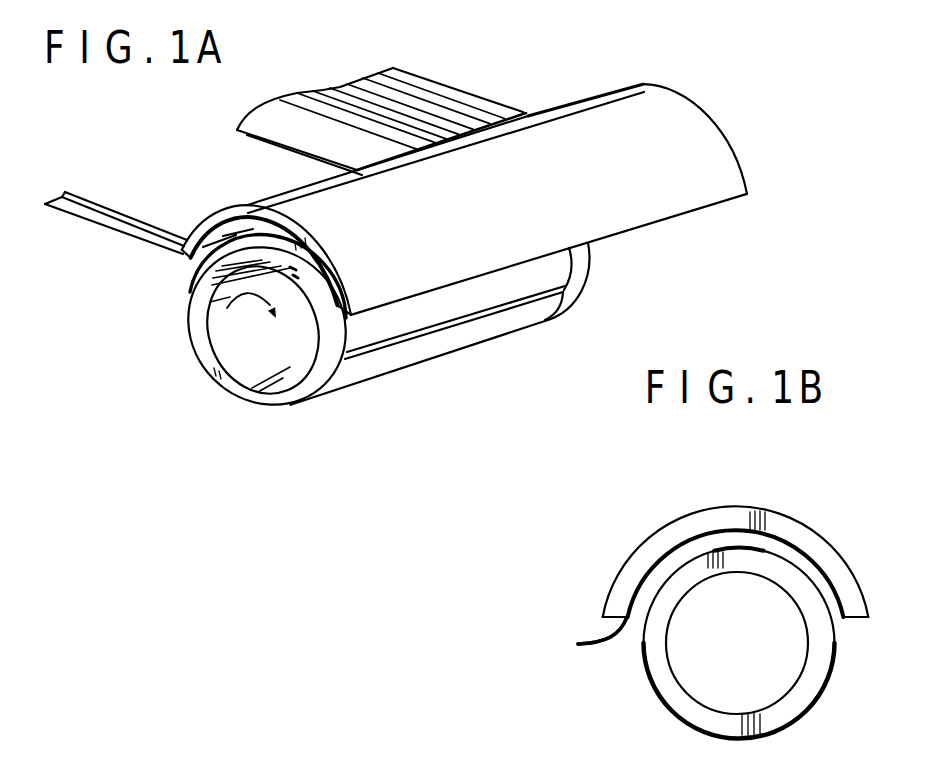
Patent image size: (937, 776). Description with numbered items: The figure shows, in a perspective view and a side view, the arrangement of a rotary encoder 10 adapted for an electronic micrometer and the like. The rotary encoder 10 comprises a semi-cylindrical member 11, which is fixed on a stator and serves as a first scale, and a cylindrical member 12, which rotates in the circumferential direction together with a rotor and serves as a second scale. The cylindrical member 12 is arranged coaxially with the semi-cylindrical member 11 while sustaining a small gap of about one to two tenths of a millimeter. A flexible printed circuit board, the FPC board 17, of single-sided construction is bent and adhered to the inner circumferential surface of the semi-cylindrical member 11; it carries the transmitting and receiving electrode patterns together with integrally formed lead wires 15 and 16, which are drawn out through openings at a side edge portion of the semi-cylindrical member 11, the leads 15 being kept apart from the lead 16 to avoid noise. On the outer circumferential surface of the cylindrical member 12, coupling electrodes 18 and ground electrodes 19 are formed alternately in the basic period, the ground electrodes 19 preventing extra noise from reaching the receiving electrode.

In FIG. 1A, the rotary encoder 10 is at (540, 98).
In FIG. 1B, the rotary encoder 10 is at (800, 496).
In FIG. 1A, the semi-cylindrical member 11 is at (708, 143).
In FIG. 1B, the semi-cylindrical member 11 is at (830, 560).
In FIG. 1A, the cylindrical member 12 is at (206, 348).
In FIG. 1B, the cylindrical member 12 is at (820, 674).
In FIG. 1A, the lead wires 15 is at (444, 94).
In FIG. 1B, the lead wires 15 is at (565, 611).
In FIG. 1A, the lead wire 16 is at (118, 212).
In FIG. 1B, the lead wire 16 is at (565, 611).
In FIG. 1A, the FPC board 17 is at (270, 144).
In FIG. 1B, the FPC board 17 is at (652, 563).
In FIG. 1A, the coupling electrodes 18 is at (450, 346).
In FIG. 1A, the ground electrodes 19 is at (565, 264).